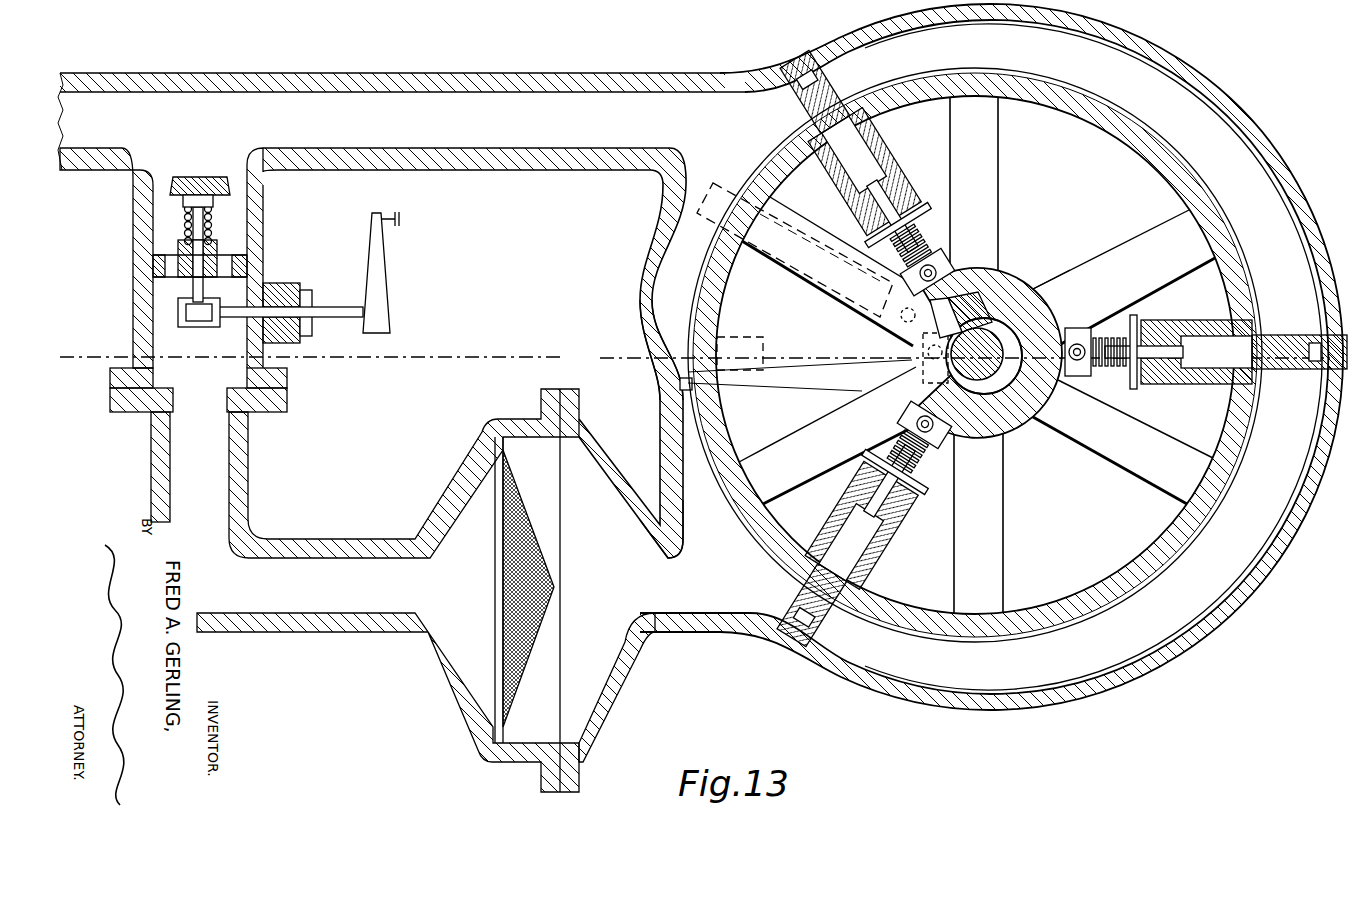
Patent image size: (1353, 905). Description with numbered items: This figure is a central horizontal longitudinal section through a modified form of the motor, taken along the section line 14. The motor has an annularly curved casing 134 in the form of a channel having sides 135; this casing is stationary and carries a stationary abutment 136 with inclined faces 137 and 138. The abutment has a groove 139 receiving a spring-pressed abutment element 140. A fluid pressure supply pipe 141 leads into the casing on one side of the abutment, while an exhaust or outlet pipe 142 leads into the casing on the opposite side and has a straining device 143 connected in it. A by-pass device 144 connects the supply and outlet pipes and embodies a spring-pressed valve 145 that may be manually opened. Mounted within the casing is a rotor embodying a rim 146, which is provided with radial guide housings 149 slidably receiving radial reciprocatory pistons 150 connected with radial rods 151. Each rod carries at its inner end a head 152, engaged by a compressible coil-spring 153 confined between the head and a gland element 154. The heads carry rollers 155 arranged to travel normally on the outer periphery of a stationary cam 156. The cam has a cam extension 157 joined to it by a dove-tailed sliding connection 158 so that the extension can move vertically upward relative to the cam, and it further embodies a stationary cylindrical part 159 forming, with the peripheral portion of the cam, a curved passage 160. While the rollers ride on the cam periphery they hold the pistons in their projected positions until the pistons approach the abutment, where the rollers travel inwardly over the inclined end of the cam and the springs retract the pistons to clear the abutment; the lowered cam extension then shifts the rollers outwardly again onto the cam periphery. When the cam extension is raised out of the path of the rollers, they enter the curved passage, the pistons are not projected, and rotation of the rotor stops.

The section line 14- 14 is at (92, 350).
The casing 134 is at (1175, 652).
The sides 135 is at (1050, 690).
The abutment 136 is at (665, 355).
The inclined face 137 is at (645, 298).
The inclined face 138 is at (668, 455).
The groove 139 is at (675, 400).
The abutment element 140 is at (680, 382).
The fluid pressure supply pipe 141 is at (600, 72).
The exhaust or outlet pipe 142 is at (305, 633).
The straining device 143 is at (503, 583).
The by-pass device 144 is at (280, 375).
The spring-pressed valve 145 is at (202, 187).
The rim 146 is at (1135, 575).
The radial guide housing 149 is at (1200, 330).
The piston 150 is at (838, 82).
The radial rod 151 is at (855, 155).
The head 152 is at (950, 265).
The coil-spring 153 is at (1112, 392).
The gland element 154 is at (1138, 383).
The roller 155 is at (905, 280).
The cam 156 is at (1034, 290).
The cam extension 157 is at (1000, 320).
The dove-tailed sliding connection 158 is at (985, 305).
The cylindrical part 159 is at (1010, 420).
The curved passage 160 is at (1048, 440).